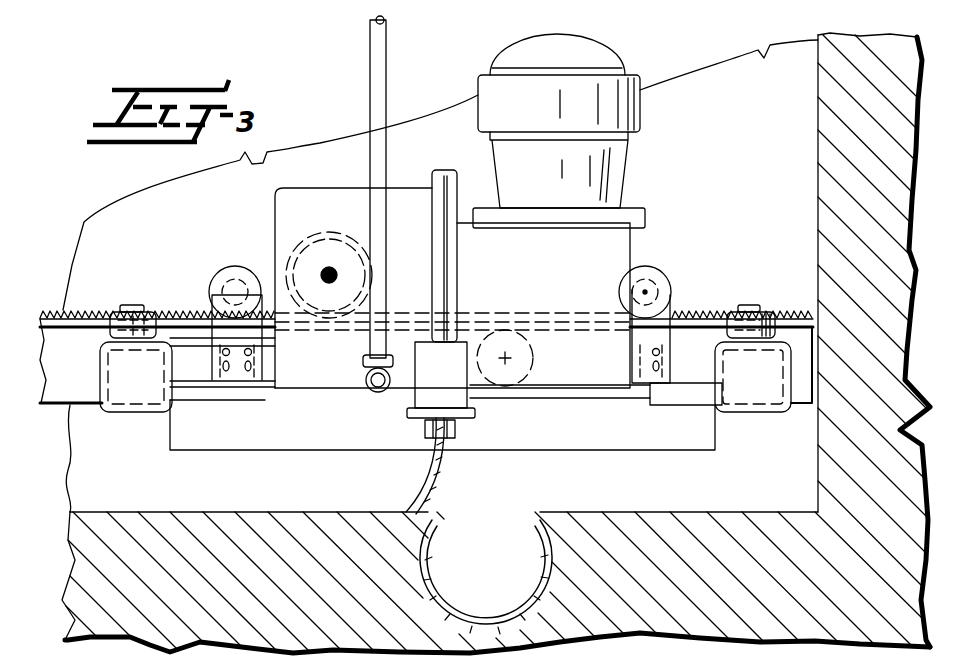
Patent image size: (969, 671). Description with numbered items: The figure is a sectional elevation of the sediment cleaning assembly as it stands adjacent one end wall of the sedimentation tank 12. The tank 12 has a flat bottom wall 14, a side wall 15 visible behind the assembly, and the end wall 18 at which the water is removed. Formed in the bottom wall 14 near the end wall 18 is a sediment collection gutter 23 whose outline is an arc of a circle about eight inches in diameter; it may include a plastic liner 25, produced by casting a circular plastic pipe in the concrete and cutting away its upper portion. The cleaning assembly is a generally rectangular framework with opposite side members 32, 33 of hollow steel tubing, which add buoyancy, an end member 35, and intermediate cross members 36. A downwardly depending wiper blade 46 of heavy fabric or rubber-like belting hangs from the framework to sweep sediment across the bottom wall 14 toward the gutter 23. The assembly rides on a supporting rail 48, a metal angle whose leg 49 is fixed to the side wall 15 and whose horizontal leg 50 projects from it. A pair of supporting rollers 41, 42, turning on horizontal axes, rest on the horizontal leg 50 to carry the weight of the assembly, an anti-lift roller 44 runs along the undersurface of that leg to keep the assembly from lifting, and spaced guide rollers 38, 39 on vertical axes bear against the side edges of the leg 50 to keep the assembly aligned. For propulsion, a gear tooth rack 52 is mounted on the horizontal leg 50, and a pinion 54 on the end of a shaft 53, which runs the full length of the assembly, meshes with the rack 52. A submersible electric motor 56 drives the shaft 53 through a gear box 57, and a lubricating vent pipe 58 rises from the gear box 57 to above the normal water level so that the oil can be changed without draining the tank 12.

The tank 12 is at (818, 55).
The bottom wall 14 is at (148, 512).
The side wall 15 is at (724, 215).
The end wall 18 is at (818, 135).
The sediment collection gutter 23 is at (536, 522).
The plastic liner 25 is at (547, 600).
The side member 32 is at (750, 413).
The side member 33 is at (134, 412).
The end member 35 is at (698, 360).
The cross member 36 is at (592, 436).
The guide roller 38 is at (768, 312).
The guide roller 39 is at (124, 312).
The supporting roller 41 is at (656, 282).
The supporting roller 42 is at (252, 270).
The anti-lift roller 44 is at (532, 356).
The wiper blade 46 is at (441, 474).
The supporting rail 48 is at (50, 405).
The leg 49 is at (88, 381).
The horizontal leg 50 is at (54, 310).
The gear tooth rack 52 is at (202, 310).
The shaft 53 is at (334, 268).
The pinion 54 is at (292, 223).
The submersible electric motor 56 is at (622, 112).
The gear box 57 is at (427, 260).
The lubricating vent pipe 58 is at (377, 89).